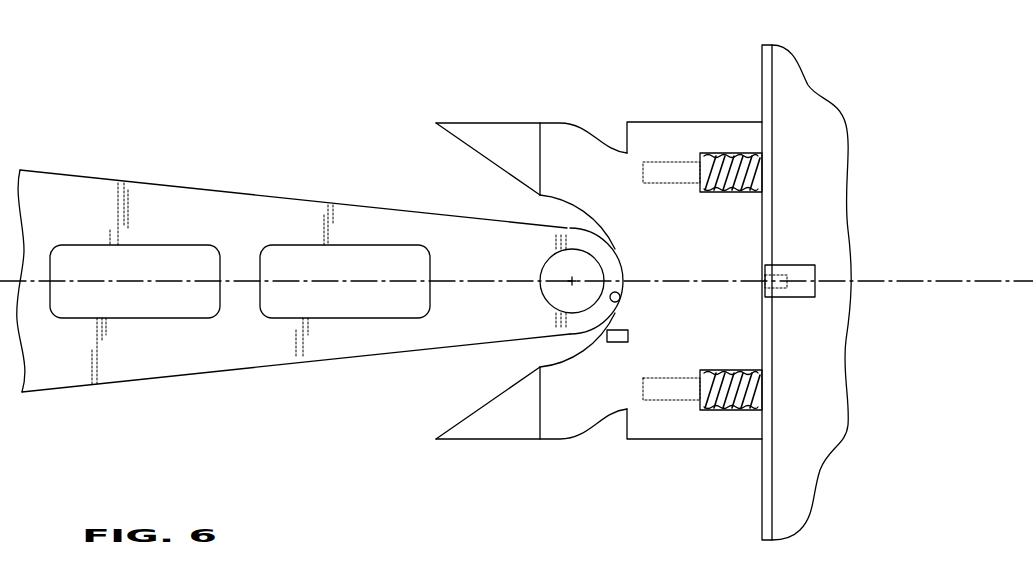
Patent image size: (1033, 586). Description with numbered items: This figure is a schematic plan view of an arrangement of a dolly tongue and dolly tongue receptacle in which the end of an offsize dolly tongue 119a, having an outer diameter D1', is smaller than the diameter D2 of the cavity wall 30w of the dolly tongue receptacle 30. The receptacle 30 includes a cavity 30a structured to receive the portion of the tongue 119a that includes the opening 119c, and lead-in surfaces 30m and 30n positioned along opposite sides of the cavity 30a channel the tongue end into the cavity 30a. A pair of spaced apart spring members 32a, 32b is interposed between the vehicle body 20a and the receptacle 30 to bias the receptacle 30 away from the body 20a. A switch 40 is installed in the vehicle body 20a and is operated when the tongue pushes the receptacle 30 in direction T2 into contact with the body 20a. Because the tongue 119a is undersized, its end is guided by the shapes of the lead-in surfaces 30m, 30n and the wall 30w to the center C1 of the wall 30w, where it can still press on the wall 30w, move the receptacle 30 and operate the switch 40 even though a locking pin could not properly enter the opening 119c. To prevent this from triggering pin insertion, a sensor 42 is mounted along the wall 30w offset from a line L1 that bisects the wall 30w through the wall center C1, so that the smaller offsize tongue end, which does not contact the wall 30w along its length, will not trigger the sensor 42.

The dolly tongue 119a is at (163, 208).
The opening 119c is at (566, 248).
The dolly tongue receptacle 30 is at (563, 439).
The lead-in surface 30m is at (473, 150).
The lead-in surface 30n is at (453, 428).
The cavity 30a is at (557, 217).
The dolly tongue receptacle wall 30w is at (620, 300).
The sensor 42 is at (620, 342).
The vehicle body 20a is at (815, 120).
The spring member 32a is at (745, 175).
The spring member 32b is at (745, 393).
The switch 40 is at (785, 265).
The cavity wall diameter D2 is at (593, 207).
The dolly tongue outer diameter D1' is at (653, 165).
The wall center C1 is at (623, 282).
The direction T2 is at (717, 281).
The line L1 is at (168, 285).